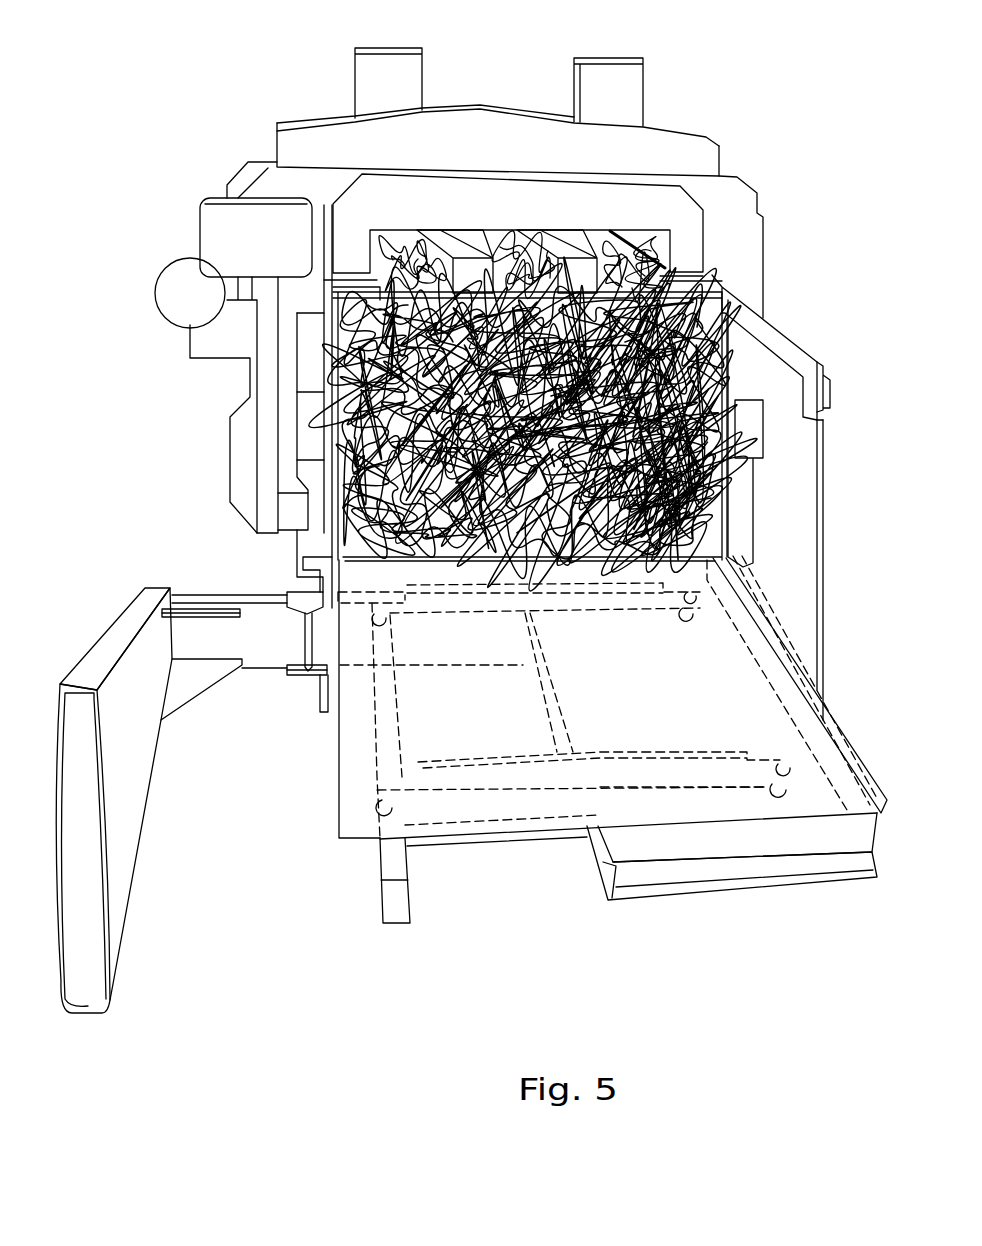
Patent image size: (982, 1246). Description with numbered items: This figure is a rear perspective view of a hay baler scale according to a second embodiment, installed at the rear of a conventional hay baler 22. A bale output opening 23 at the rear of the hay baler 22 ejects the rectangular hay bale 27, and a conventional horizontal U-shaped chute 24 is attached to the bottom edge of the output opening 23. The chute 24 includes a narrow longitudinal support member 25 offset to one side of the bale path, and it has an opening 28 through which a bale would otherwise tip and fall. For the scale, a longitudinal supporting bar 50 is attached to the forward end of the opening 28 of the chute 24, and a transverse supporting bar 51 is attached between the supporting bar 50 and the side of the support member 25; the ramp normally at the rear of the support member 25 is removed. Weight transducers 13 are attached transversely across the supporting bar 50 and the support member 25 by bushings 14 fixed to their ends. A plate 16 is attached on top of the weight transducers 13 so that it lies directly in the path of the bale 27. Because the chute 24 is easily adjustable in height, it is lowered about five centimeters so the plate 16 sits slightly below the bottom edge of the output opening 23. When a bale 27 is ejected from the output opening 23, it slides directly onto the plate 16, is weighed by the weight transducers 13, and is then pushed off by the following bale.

The hay baler 22 is at (506, 84).
The bale output opening 23 is at (723, 308).
The hay bale 27 is at (700, 498).
The opening 28 is at (263, 650).
The plate 16 is at (339, 838).
The transverse supporting bar 51 is at (499, 842).
The longitudinal support member 25 is at (700, 845).
The chute 24 is at (827, 865).
The longitudinal supporting bar 50 is at (380, 742).
The weight transducers 13 is at (628, 612).
The bushings 14 is at (380, 805).